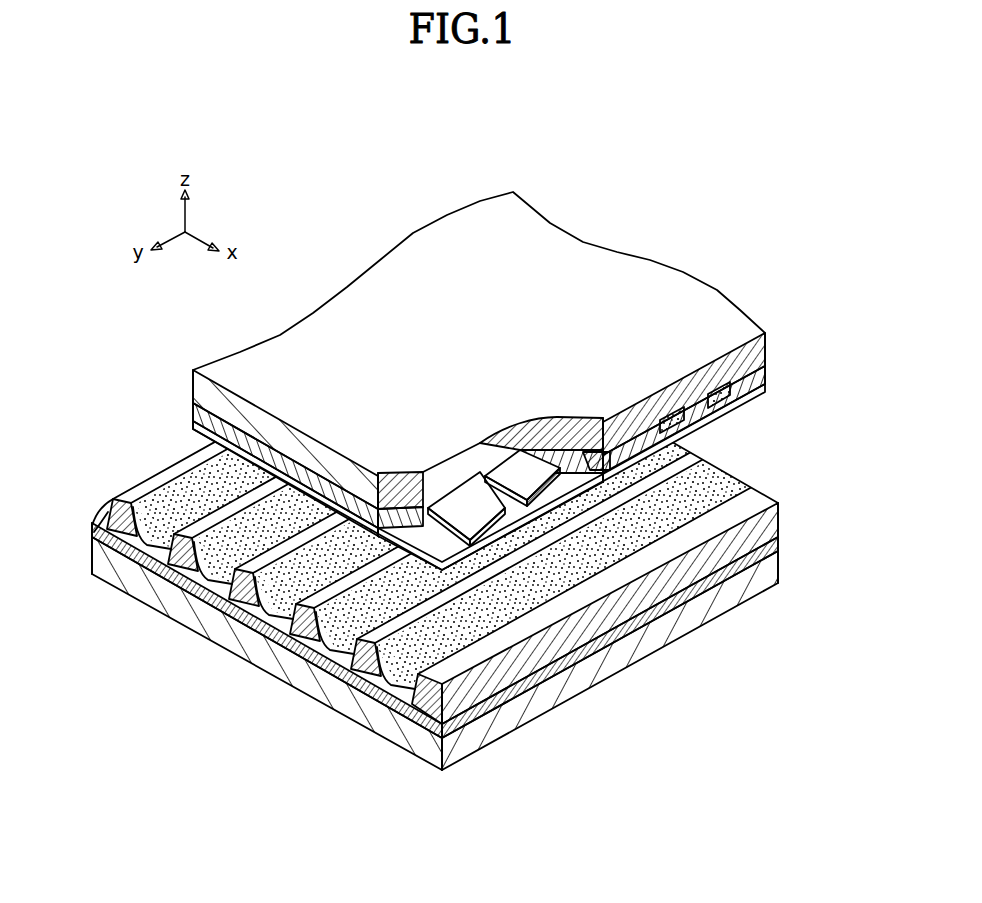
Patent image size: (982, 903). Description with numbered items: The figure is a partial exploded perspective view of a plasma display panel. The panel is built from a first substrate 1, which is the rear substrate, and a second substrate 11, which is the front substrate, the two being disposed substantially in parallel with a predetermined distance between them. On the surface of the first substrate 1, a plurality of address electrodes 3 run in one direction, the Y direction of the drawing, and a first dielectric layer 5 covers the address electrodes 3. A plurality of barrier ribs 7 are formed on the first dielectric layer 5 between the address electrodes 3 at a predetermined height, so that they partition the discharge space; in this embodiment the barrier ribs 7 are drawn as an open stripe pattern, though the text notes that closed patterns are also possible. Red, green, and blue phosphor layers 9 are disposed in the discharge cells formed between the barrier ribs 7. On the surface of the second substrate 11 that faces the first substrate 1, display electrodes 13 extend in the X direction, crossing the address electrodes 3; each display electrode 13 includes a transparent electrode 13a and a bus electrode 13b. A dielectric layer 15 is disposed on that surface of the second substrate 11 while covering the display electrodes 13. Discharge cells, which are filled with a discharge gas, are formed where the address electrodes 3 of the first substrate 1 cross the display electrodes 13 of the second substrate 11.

The first substrate 1 is at (399, 734).
The address electrodes 3 is at (145, 568).
The first dielectric layer 5 is at (96, 526).
The barrier ribs 7 is at (236, 611).
The phosphor layers 9 is at (170, 498).
The second substrate 11 is at (613, 270).
The display electrodes 13 is at (490, 362).
The transparent electrode 13a is at (455, 500).
The bus electrode 13b is at (450, 532).
The dielectric layer 15 is at (770, 378).